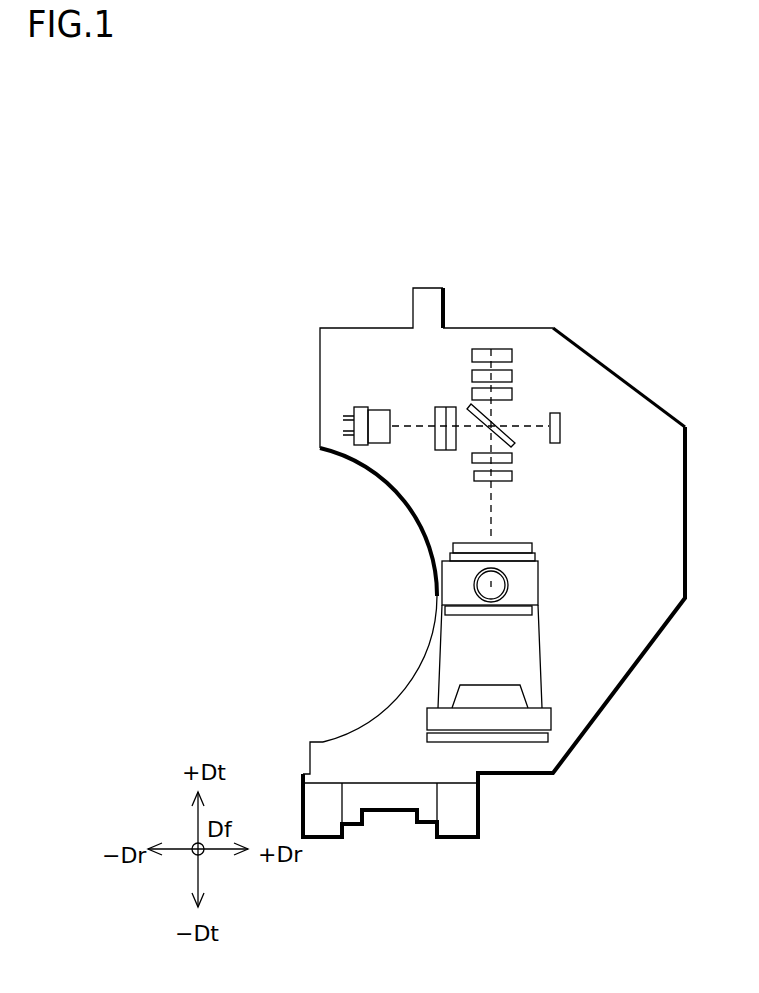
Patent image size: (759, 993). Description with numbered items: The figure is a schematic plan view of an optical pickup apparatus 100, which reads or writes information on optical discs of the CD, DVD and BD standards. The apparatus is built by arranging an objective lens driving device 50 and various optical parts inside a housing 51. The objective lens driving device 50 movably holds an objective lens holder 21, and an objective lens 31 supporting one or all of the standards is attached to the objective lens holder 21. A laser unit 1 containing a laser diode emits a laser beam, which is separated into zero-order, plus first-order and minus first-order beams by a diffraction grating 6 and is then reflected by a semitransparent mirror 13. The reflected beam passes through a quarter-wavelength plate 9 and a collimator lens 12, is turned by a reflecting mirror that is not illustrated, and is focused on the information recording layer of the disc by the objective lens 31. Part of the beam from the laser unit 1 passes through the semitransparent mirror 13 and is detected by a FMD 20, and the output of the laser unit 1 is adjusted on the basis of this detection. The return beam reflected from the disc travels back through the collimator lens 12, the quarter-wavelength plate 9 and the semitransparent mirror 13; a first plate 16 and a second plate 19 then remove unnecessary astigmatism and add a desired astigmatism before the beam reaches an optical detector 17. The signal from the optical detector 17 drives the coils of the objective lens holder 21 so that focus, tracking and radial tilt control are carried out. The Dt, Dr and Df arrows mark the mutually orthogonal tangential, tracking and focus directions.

The optical pickup apparatus 100 is at (426, 219).
The laser unit 1 is at (360, 407).
The diffraction grating 6 is at (455, 407).
The optical detector 17 is at (513, 342).
The second plate 19 is at (513, 370).
The first plate 16 is at (513, 390).
The semitransparent mirror 13 is at (507, 427).
The FMD 20 is at (560, 414).
The quarter-wavelength plate 9 is at (513, 457).
The collimator lens 12 is at (513, 477).
The housing 51 is at (318, 383).
The objective lens driving device 50 is at (447, 570).
The objective lens holder 21 is at (447, 582).
The objective lens 31 is at (478, 592).